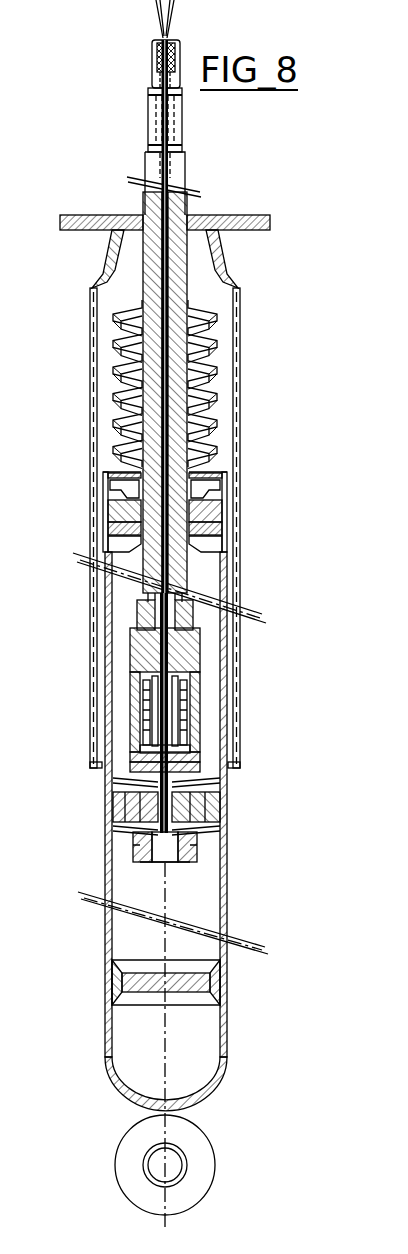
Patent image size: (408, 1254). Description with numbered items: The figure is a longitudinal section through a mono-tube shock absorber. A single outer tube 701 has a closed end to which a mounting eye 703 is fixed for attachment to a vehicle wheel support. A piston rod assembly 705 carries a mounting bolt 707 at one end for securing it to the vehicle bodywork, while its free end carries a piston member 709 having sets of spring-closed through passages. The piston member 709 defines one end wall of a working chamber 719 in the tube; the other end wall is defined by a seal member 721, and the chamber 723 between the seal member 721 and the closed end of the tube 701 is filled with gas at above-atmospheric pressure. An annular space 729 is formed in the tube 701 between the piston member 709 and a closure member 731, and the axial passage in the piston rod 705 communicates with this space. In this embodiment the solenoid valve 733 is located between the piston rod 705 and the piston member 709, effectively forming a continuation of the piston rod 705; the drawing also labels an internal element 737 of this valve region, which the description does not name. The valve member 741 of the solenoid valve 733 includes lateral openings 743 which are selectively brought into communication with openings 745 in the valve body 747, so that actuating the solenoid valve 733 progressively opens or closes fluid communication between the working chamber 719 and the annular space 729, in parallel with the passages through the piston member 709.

The outer tube 701 is at (112, 880).
The mounting eye 703 is at (130, 1165).
The piston rod assembly 705 is at (182, 573).
The mounting bolt 707 is at (176, 119).
The piston member 709 is at (117, 810).
The working chamber 719 is at (200, 895).
The seal member 721 is at (220, 995).
The chamber 723 is at (200, 1052).
The annular space 729 is at (207, 668).
The closure member 731 is at (225, 500).
The solenoid valve 733 is at (197, 718).
The spring 737 is at (190, 710).
The valve member 741 is at (197, 758).
The lateral openings 743 is at (112, 797).
The openings 745 is at (133, 763).
The valve body 747 is at (133, 735).